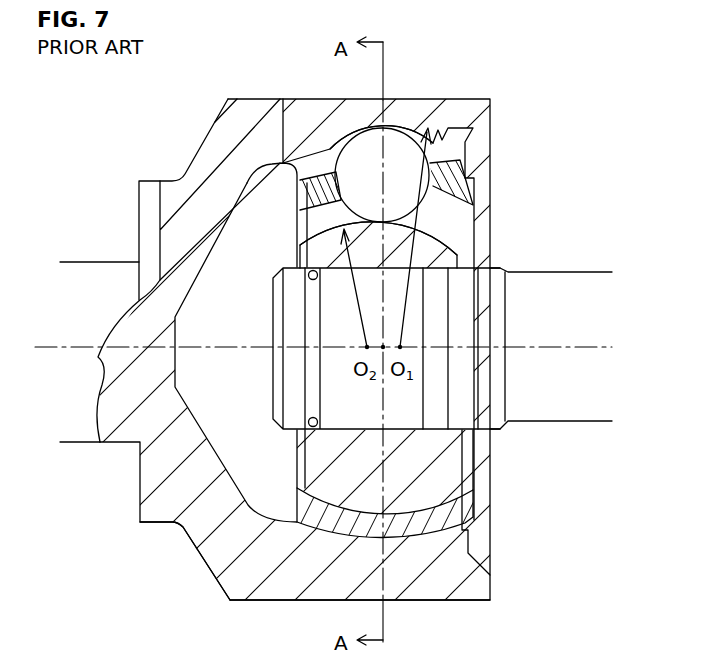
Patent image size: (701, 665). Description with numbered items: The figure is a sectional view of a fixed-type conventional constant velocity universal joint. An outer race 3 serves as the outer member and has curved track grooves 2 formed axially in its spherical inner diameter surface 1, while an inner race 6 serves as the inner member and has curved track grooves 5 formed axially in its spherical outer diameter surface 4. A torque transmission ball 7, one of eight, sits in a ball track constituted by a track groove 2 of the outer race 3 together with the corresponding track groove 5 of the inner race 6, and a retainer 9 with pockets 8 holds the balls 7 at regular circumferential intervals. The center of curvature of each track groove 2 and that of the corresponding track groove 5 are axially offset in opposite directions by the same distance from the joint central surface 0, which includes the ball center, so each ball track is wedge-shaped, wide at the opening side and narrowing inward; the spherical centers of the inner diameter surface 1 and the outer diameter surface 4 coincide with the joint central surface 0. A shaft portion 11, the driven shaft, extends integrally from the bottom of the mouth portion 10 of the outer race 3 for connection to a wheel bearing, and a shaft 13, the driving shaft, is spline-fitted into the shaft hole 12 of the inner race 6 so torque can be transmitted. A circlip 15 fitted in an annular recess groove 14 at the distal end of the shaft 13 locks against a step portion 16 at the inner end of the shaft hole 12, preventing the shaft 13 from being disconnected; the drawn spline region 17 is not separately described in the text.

The joint central surface 0 is at (410, 338).
The spherical inner diameter surface 1 is at (421, 536).
The track groove 2 is at (444, 140).
The outer race 3 is at (188, 138).
The spherical outer diameter surface 4 is at (432, 526).
The track groove 5 is at (447, 240).
The inner race 6 is at (338, 492).
The torque transmission ball 7 is at (358, 152).
The pocket 8 is at (345, 148).
The retainer 9 is at (463, 172).
The mouth portion 10 is at (243, 583).
The shaft portion 11 is at (87, 282).
The shaft hole 12 is at (185, 527).
The shaft 13 is at (580, 287).
The annular recess groove 14 is at (303, 378).
The circlip 15 is at (310, 282).
The step portion 16 is at (312, 271).
The spline portion 17 is at (417, 422).